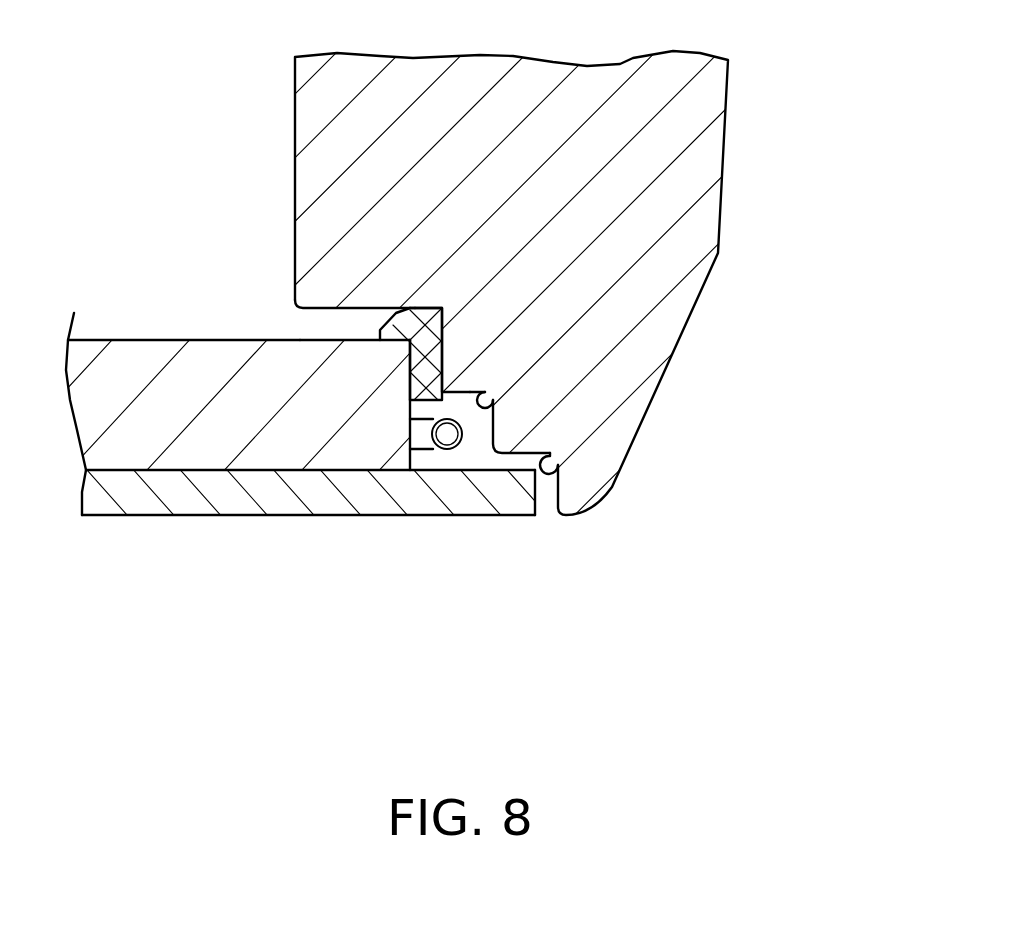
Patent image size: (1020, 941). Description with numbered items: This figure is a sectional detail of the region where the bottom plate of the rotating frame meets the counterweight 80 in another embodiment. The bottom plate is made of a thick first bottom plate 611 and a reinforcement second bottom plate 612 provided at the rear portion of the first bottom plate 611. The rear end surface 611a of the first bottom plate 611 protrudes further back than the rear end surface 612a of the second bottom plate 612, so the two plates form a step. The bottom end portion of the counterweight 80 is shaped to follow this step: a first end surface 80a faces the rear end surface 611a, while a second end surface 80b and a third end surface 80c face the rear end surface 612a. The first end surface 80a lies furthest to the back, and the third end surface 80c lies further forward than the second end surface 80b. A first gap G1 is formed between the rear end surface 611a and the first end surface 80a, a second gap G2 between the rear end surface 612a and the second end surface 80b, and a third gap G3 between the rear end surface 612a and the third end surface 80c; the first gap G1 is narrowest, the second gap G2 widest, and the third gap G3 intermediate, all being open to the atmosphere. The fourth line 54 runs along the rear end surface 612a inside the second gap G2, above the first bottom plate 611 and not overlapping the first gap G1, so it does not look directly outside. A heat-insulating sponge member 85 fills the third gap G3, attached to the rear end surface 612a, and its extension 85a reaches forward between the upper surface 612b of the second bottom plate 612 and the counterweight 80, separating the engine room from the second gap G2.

The counterweight 80 is at (688, 126).
The first end surface 80a is at (552, 451).
The second end surface 80b is at (490, 387).
The third end surface 80c is at (445, 304).
The sponge member 85 is at (427, 383).
The extension 85a is at (304, 222).
The fourth line 54 is at (447, 450).
The first bottom plate 611 is at (410, 493).
The rear end surface 611a is at (538, 492).
The second bottom plate 612 is at (288, 447).
The rear end surface 612a is at (443, 362).
The upper surface 612b is at (272, 251).
The first gap G1 is at (545, 505).
The second gap G2 is at (477, 432).
The third gap G3 is at (294, 310).